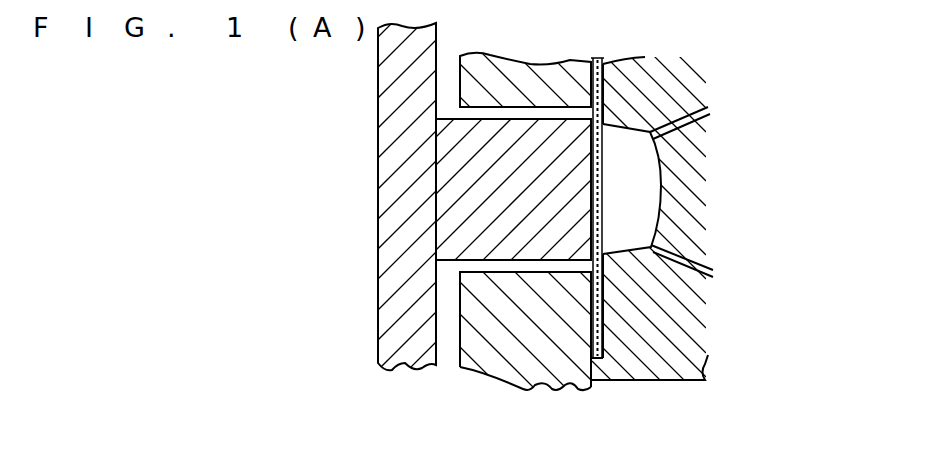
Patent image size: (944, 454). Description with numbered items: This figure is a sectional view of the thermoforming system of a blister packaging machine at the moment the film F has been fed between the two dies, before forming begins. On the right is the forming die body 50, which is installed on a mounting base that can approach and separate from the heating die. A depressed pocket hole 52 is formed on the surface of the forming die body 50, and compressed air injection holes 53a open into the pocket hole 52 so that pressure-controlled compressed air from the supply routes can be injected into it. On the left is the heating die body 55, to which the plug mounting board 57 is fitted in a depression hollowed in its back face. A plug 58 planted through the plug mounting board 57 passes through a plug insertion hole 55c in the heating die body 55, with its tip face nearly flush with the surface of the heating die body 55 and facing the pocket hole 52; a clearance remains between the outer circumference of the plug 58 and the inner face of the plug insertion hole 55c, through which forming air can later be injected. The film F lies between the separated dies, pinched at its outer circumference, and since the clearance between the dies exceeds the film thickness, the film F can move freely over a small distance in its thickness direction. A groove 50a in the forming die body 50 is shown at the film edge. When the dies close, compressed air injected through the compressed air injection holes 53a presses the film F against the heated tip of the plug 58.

The plug mounting board 57 is at (398, 153).
The plug 58 is at (487, 213).
The heating die body 55 is at (473, 310).
The plug insertion hole 55c is at (510, 265).
The forming die body 50 is at (656, 335).
The film-receiving groove 50a is at (595, 362).
The film F is at (597, 224).
The pocket hole 52 is at (631, 179).
The compressed air injection hole 53a is at (690, 124).